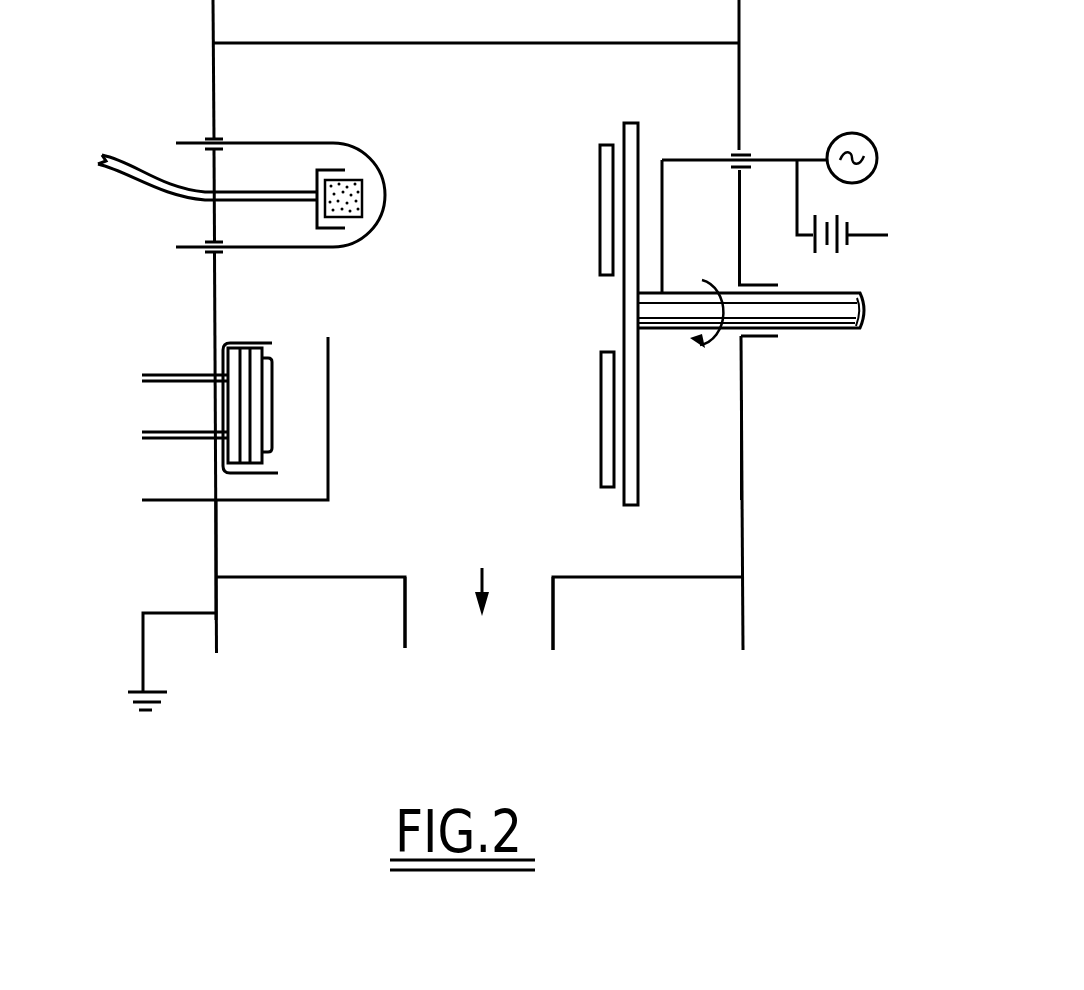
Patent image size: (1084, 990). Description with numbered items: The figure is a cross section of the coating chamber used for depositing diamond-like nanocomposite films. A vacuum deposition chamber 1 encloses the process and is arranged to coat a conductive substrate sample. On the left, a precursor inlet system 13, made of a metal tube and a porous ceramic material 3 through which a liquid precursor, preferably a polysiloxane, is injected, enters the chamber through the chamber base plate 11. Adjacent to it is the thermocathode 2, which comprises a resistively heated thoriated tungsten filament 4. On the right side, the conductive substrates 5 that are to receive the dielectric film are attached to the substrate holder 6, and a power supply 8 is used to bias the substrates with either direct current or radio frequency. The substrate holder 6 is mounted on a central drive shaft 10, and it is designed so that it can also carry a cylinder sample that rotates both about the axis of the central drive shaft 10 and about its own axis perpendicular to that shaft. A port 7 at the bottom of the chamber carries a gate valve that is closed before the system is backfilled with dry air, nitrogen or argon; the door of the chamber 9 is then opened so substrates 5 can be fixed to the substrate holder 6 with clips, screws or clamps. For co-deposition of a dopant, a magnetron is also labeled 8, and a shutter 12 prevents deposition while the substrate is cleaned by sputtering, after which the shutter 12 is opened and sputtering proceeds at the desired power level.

The vacuum deposition chamber 1 is at (320, 98).
The thermocathode 2 is at (346, 136).
The porous ceramic material 3 is at (360, 190).
The thoriated tungsten filament 4 is at (357, 246).
The conductive substrates 5 is at (600, 420).
The substrate holder 6 is at (640, 395).
The port 7 is at (444, 622).
The power supply 8 is at (273, 395).
The door of the chamber 9 is at (743, 455).
The central drive shaft 10 is at (846, 310).
The chamber base plate 11 is at (215, 540).
The shutter 12 is at (328, 371).
The precursor inlet system 13 is at (148, 197).